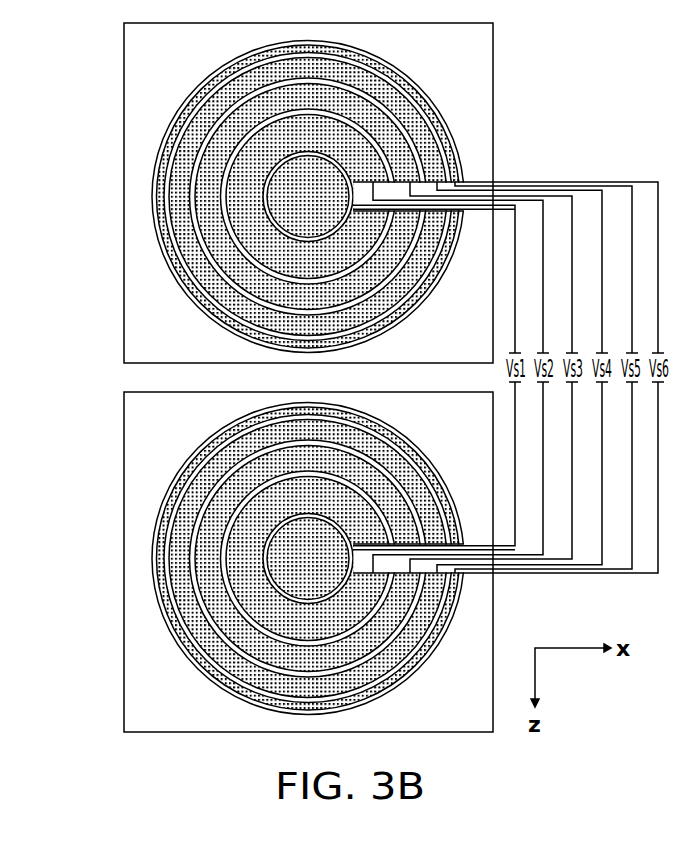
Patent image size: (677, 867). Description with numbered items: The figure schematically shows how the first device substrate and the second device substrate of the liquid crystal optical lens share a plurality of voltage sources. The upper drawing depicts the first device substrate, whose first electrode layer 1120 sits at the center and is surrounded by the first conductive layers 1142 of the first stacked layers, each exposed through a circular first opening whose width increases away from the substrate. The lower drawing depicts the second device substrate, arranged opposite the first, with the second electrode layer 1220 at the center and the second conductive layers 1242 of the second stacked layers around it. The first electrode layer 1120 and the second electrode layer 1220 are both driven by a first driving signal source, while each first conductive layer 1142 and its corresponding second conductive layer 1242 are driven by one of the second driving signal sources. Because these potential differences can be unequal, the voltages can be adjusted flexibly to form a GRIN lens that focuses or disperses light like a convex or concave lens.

The first electrode layer 1120 is at (282, 211).
The first conductive layer 1142 is at (227, 133).
The second electrode layer 1220 is at (297, 570).
The second conductive layer 1242 is at (225, 498).